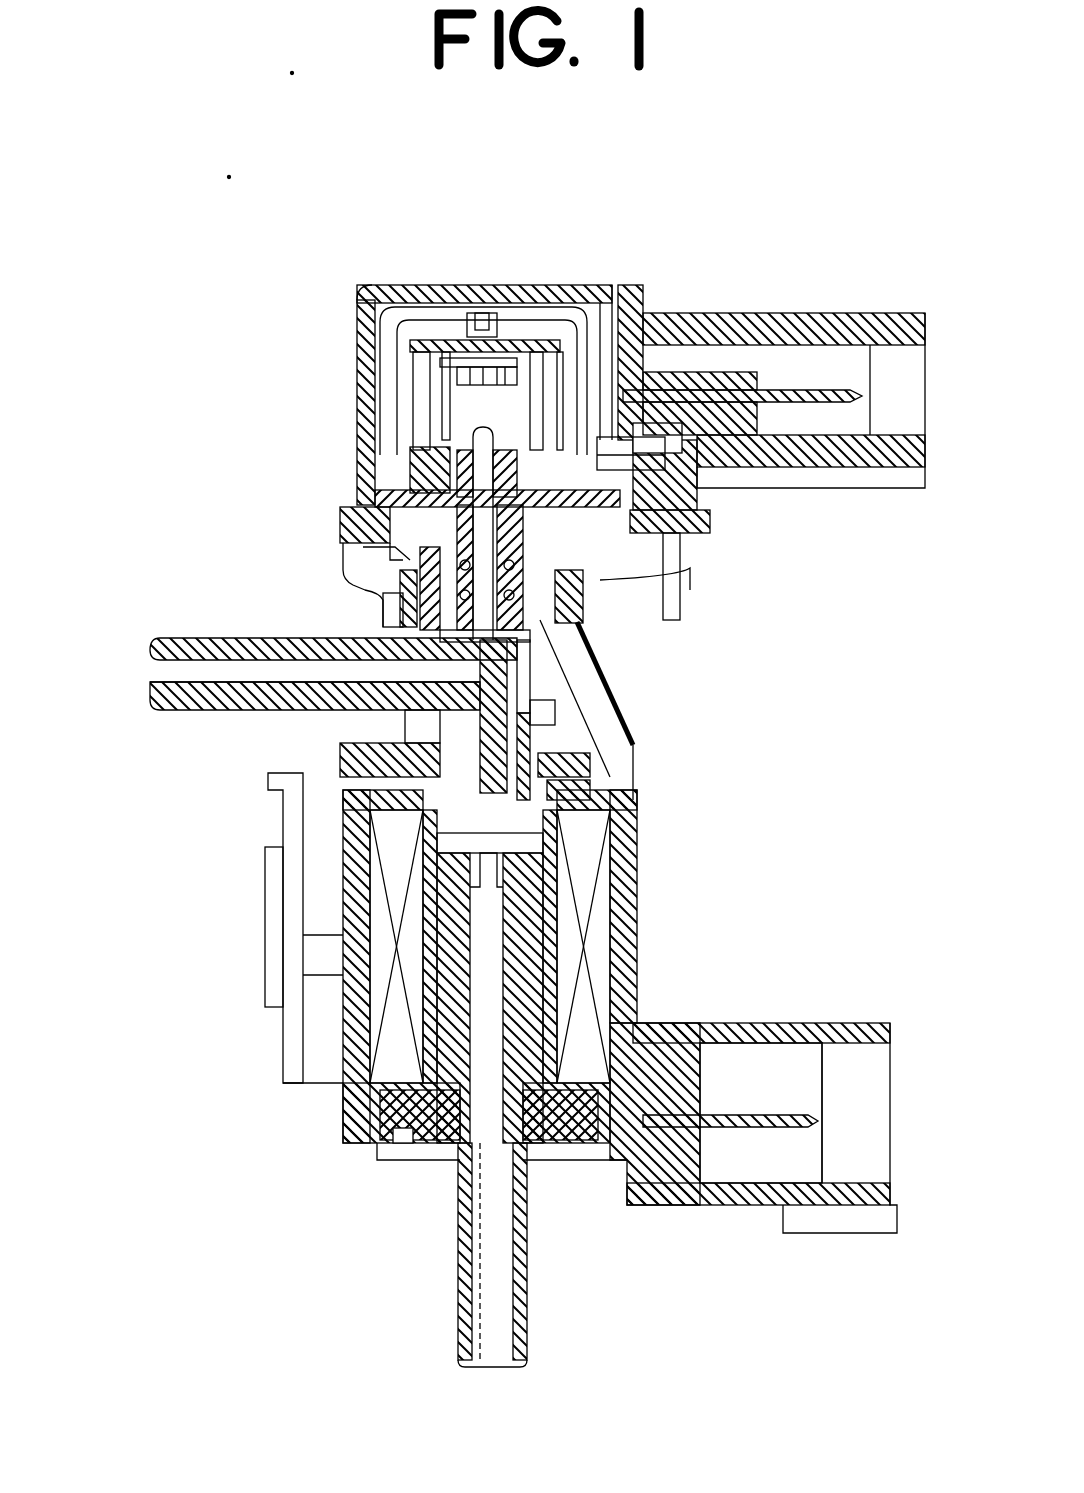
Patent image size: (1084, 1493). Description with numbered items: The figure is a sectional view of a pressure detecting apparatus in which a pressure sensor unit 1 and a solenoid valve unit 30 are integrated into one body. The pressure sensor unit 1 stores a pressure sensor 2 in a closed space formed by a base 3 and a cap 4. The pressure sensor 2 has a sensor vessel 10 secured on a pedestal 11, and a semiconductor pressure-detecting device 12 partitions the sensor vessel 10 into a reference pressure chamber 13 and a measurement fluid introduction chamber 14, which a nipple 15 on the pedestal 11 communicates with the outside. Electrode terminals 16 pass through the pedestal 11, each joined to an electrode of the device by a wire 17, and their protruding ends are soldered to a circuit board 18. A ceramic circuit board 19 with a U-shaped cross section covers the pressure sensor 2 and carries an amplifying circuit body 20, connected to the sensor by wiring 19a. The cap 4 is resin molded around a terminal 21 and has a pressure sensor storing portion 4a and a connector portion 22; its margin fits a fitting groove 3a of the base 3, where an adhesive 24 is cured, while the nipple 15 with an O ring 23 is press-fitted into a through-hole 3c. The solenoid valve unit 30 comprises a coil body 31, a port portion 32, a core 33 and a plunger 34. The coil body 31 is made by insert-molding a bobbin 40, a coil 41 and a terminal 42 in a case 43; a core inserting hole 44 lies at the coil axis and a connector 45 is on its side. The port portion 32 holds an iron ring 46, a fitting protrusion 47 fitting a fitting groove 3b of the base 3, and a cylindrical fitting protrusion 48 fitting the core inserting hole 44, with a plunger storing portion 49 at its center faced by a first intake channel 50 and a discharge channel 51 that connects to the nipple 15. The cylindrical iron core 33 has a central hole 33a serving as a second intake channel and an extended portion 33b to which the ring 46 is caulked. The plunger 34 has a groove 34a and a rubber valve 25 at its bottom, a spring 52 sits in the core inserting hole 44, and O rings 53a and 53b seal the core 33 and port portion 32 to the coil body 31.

The pressure sensor unit 1 is at (357, 343).
The pressure sensor 2 is at (570, 395).
The base 3 is at (333, 578).
The fitting groove 3a is at (700, 545).
The fitting groove 3b is at (378, 562).
The through-hole 3c is at (363, 560).
The cap 4 is at (697, 312).
The pressure sensor storing portion 4a is at (360, 290).
The sensor vessel 10 is at (440, 368).
The pedestal 11 is at (430, 450).
The semiconductor pressure-detecting device 12 is at (437, 345).
The reference pressure chamber 13 is at (510, 370).
The measurement fluid introduction chamber 14 is at (445, 428).
The nipple 15 is at (525, 548).
The electrode terminal 16 is at (440, 405).
The wire 17 is at (435, 362).
The circuit board 18 is at (397, 500).
The ceramic circuit board 19 is at (488, 313).
The wiring 19a is at (585, 380).
The amplifying circuit body 20 is at (490, 358).
The terminal 21 is at (800, 393).
The connector portion 22 is at (790, 313).
The O ring 23 is at (570, 625).
The adhesive 24 is at (660, 508).
The rubber valve 25 is at (545, 840).
The solenoid valve unit 30 is at (268, 880).
The coil body 31 is at (640, 940).
The port portion 32 is at (615, 695).
The core 33 is at (530, 1225).
The central hole 33a is at (472, 1235).
The extended portion 33b is at (268, 800).
The plunger 34 is at (535, 700).
The groove 34a is at (545, 732).
The bobbin 40 is at (360, 1098).
The coil 41 is at (375, 985).
The terminal 42 is at (775, 1130).
The case 43 is at (380, 950).
The core inserting hole 44 is at (530, 985).
The connector 45 is at (790, 1022).
The ring 46 is at (555, 765).
The fitting protrusion 47 is at (395, 586).
The fitting protrusion 48 is at (580, 900).
The plunger storing portion 49 is at (415, 728).
The first intake channel 50 is at (203, 710).
The discharge channel 51 is at (520, 650).
The spring 52 is at (580, 860).
The O ring 53a is at (405, 1148).
The O ring 53b is at (560, 790).